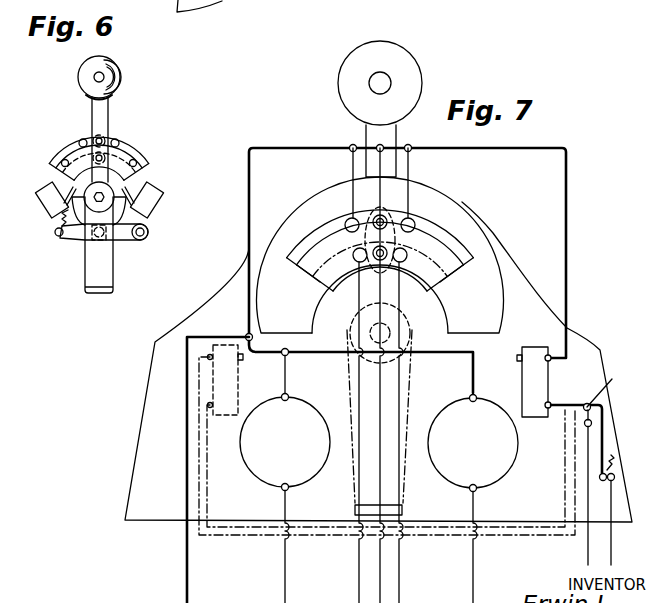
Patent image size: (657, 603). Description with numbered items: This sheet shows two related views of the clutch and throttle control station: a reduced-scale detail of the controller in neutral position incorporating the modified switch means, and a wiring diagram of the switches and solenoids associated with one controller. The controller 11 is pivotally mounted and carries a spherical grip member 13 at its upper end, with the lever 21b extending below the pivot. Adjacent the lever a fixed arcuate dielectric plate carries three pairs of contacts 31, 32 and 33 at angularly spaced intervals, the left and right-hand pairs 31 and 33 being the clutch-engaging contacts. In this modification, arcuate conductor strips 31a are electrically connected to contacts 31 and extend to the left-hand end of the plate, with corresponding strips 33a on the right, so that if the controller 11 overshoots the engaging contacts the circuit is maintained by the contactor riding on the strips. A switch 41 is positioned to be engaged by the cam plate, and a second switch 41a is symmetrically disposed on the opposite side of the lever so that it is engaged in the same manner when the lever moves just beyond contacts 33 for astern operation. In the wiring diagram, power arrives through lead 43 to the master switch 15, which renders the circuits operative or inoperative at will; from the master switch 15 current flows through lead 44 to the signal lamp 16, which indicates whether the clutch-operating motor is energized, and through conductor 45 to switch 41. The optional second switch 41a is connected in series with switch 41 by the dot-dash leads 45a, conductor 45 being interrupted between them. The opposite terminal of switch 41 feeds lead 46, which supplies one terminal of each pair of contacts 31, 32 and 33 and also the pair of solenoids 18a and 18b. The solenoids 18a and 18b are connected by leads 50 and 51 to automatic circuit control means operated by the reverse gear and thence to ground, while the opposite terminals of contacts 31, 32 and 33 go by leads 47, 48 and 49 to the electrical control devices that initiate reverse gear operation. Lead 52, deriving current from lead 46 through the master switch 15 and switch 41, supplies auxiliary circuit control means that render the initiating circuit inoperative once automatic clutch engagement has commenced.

In FIG. 6, the controller 11 is at (93, 108).
In FIG. 6, the spherical grip member 13 is at (113, 78).
In FIG. 6, the contacts 31 is at (79, 141).
In FIG. 7, the contacts 31 is at (355, 250).
In FIG. 6, the arcuate conductor strips 31a is at (60, 163).
In FIG. 7, the arcuate conductor strips 31a is at (300, 275).
In FIG. 7, the contacts 32 is at (383, 218).
In FIG. 6, the contacts 33 is at (118, 140).
In FIG. 7, the contacts 33 is at (405, 250).
In FIG. 6, the arcuate conductor strips 33a is at (137, 163).
In FIG. 7, the arcuate conductor strips 33a is at (455, 253).
In FIG. 6, the switch 41 is at (152, 200).
In FIG. 7, the switch 41 is at (537, 380).
In FIG. 6, the second switch 41a is at (47, 190).
In FIG. 7, the second switch 41a is at (230, 378).
In FIG. 6, the lever 21b is at (107, 265).
In FIG. 7, the lead 46 is at (567, 225).
In FIG. 7, the lead 47 is at (358, 297).
In FIG. 7, the lead 48 is at (395, 285).
In FIG. 7, the lead 49 is at (400, 315).
In FIG. 7, the solenoid 18a is at (257, 458).
In FIG. 7, the solenoid 18b is at (497, 473).
In FIG. 7, the lead 52 is at (186, 420).
In FIG. 7, the conductor 45 is at (553, 413).
In FIG. 7, the leads 45a is at (308, 531).
In FIG. 7, the master switch 15 is at (609, 390).
In FIG. 7, the signal light 16 is at (618, 468).
In FIG. 7, the lead 44 is at (605, 421).
In FIG. 7, the lead 43 is at (588, 557).
In FIG. 7, the lead 50 is at (283, 588).
In FIG. 7, the lead 51 is at (474, 587).